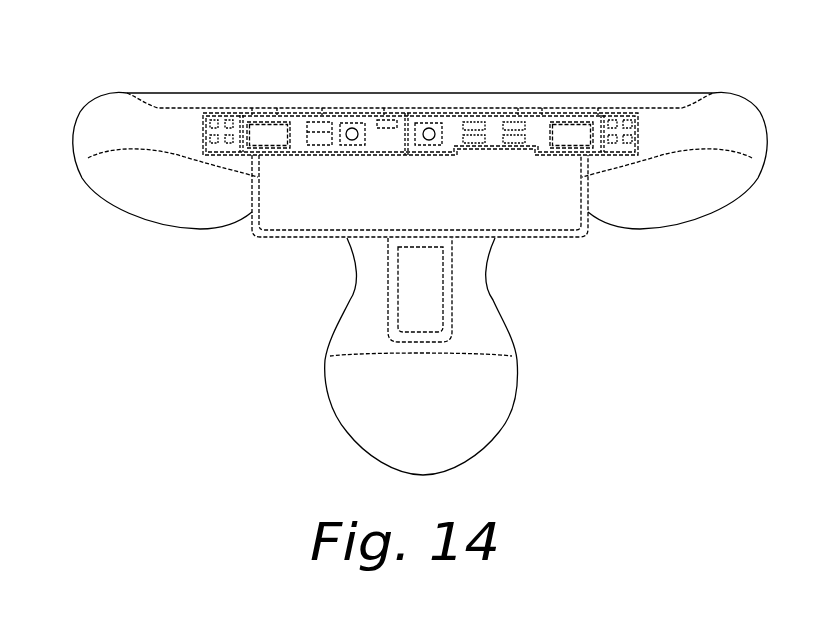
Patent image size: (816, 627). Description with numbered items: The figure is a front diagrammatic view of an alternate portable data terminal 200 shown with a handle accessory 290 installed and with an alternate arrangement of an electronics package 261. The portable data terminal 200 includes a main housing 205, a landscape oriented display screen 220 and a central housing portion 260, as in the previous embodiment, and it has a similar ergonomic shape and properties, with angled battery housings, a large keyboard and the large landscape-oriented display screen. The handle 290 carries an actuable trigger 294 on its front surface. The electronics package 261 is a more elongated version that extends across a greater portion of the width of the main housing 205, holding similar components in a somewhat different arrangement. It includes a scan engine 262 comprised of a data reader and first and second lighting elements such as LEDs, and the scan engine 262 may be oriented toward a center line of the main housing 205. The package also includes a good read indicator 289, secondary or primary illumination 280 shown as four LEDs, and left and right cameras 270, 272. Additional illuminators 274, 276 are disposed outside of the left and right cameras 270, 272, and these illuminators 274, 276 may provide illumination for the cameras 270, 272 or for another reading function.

The portable data terminal 200 is at (118, 262).
The main housing 205 is at (90, 173).
The landscape oriented display screen 220 is at (183, 93).
The central housing portion 260 is at (257, 238).
The electronics package 261 is at (543, 166).
The scan engine 262 is at (350, 106).
The left camera 270 is at (266, 131).
The right camera 272 is at (563, 122).
The additional illuminator 274 is at (221, 116).
The additional illuminator 276 is at (620, 114).
The secondary or primary illumination 280 is at (492, 115).
The good read indicator 289 is at (424, 126).
The handle accessory 290 is at (347, 428).
The actuable trigger 294 is at (417, 295).